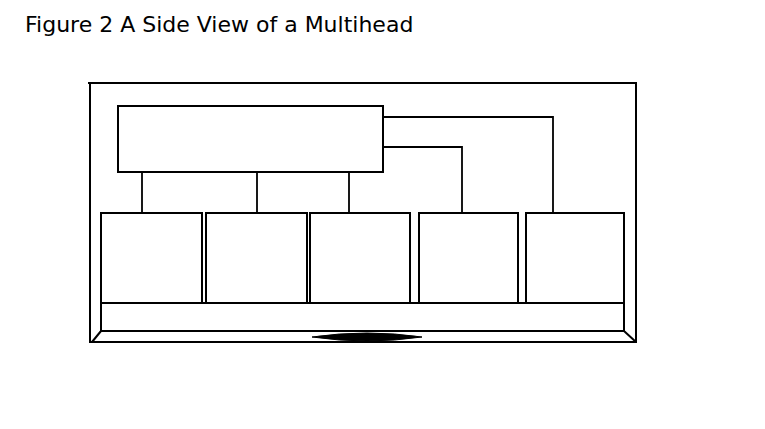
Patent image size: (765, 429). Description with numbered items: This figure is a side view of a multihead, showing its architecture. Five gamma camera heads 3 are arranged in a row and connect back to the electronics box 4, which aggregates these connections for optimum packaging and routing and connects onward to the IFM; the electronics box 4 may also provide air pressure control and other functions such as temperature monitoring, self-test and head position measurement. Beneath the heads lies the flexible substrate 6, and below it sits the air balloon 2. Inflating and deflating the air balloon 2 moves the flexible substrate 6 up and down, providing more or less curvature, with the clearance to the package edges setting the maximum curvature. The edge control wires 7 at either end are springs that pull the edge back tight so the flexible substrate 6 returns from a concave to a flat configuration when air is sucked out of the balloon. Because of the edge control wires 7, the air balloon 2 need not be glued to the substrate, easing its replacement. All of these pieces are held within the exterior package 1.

The exterior package 1 is at (262, 343).
The air balloon 2 is at (350, 343).
The gamma camera heads 3 is at (353, 287).
The electronics box 4 is at (347, 120).
The flexible substrate 6 is at (462, 322).
The edge control wires 7 is at (93, 343).